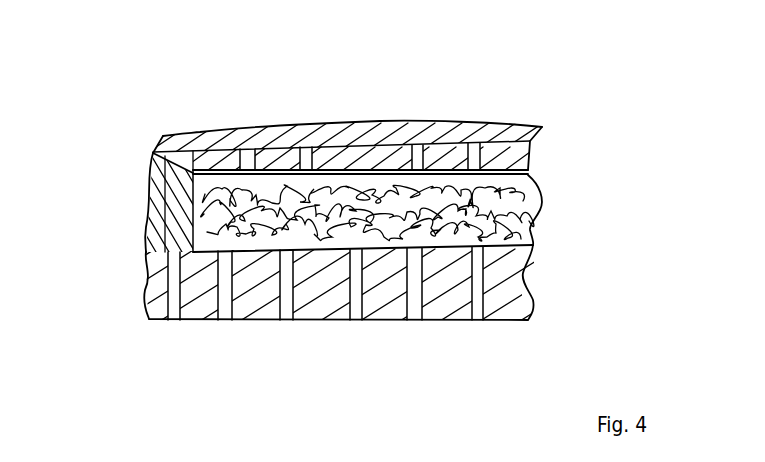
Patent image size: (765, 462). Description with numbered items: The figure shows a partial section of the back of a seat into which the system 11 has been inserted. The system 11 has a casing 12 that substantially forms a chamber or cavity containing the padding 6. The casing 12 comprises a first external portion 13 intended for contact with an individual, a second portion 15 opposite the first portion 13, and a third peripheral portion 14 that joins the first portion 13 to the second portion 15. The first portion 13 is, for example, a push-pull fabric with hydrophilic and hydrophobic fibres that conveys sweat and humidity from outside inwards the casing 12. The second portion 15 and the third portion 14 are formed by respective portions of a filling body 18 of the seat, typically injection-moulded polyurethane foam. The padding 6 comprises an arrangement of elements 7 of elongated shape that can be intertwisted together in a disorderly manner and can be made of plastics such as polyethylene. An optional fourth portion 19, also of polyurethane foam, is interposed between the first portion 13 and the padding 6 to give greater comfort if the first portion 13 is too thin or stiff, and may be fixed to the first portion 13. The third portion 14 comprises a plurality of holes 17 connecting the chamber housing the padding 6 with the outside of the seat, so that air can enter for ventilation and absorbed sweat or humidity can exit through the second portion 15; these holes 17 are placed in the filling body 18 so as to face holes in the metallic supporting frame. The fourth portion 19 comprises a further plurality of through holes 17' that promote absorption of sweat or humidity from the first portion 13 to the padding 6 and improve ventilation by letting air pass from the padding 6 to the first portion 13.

The padding 6 is at (258, 126).
The elements of elongated shape 7 is at (366, 122).
The system 11 is at (630, 70).
The casing 12 is at (86, 128).
The first external portion 13 is at (540, 137).
The third peripheral portion 14 is at (162, 221).
The second portion 15 is at (149, 319).
The holes 17 is at (335, 332).
The through holes 17' is at (379, 104).
The filling body 18 is at (582, 228).
The fourth portion 19 is at (186, 174).